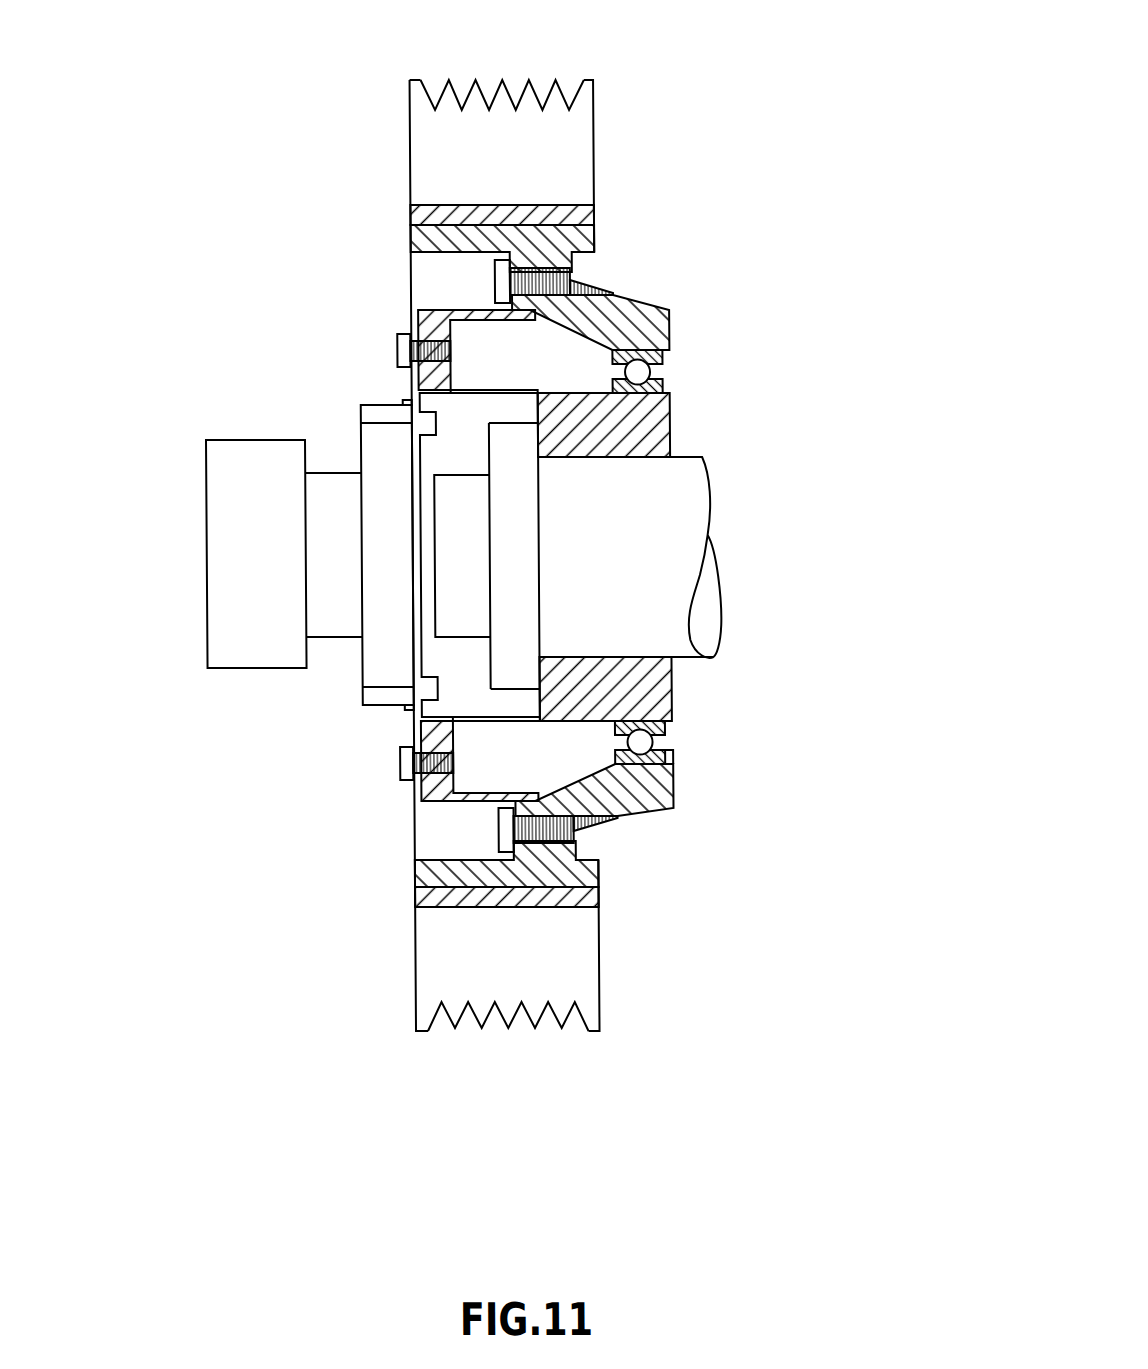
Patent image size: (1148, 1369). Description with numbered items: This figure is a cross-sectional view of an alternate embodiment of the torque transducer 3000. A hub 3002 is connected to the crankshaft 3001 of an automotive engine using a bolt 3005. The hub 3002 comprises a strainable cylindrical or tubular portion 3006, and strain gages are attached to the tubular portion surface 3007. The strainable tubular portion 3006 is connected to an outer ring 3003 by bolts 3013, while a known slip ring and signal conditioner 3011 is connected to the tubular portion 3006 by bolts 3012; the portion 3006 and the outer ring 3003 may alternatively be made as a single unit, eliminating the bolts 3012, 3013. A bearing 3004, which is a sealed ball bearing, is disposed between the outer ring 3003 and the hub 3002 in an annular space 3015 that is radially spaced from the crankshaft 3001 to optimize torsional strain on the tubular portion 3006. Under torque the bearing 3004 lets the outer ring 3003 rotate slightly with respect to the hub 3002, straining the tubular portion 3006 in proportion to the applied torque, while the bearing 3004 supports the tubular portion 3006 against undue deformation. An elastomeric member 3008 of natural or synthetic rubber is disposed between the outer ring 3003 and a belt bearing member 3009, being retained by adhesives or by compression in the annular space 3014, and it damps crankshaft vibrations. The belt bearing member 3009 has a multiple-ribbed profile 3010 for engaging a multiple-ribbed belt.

The drive assembly 3000 is at (490, 549).
The crankshaft 3001 is at (665, 482).
The hub 3002 is at (647, 415).
The outer ring 3003 is at (641, 310).
The bearing 3004 is at (658, 359).
The bolt 3005 is at (507, 648).
The strainable tubular portion 3006 is at (478, 388).
The tubular portion surface 3007 is at (502, 717).
The elastomeric member 3008 is at (590, 212).
The belt bearing member 3009 is at (546, 952).
The multiple-ribbed profile 3010 is at (558, 1019).
The slip ring and signal conditioner 3011 is at (248, 621).
The bolts 3012 is at (395, 347).
The bolts 3013 is at (493, 272).
The annular space 3014 is at (376, 191).
The annular space 3015 is at (688, 749).